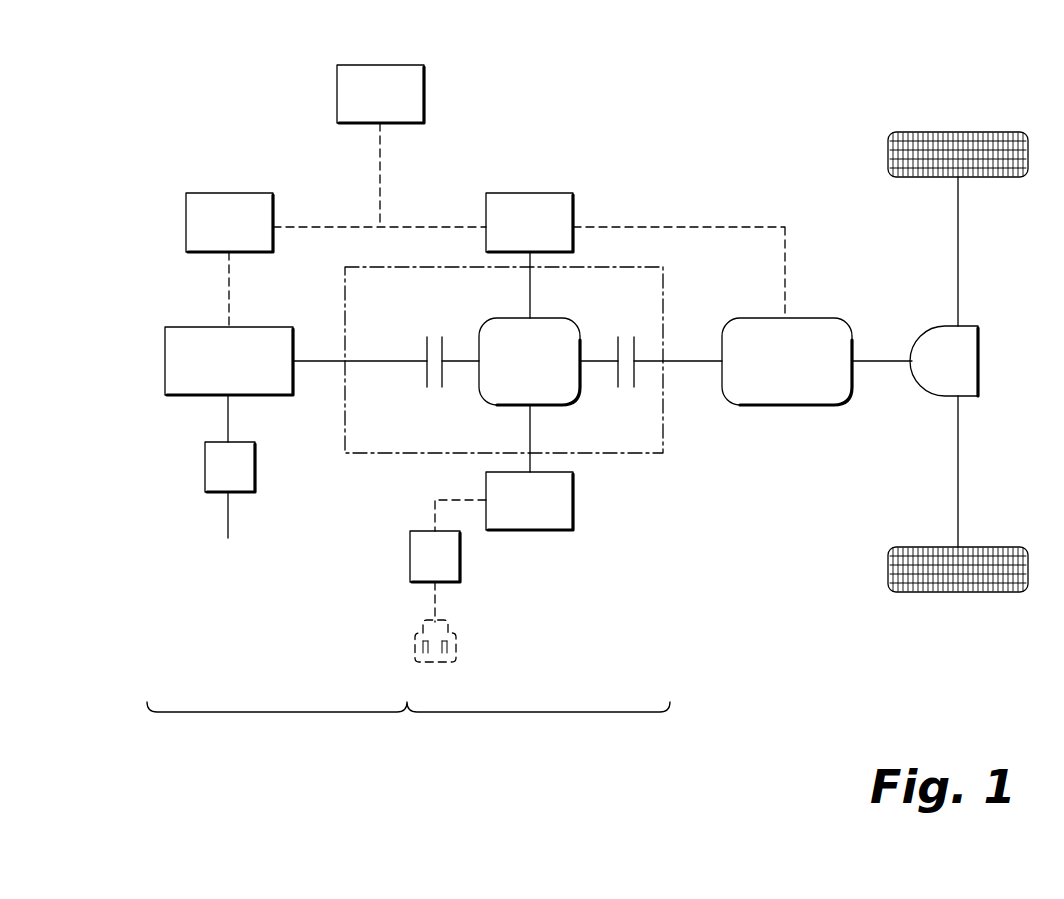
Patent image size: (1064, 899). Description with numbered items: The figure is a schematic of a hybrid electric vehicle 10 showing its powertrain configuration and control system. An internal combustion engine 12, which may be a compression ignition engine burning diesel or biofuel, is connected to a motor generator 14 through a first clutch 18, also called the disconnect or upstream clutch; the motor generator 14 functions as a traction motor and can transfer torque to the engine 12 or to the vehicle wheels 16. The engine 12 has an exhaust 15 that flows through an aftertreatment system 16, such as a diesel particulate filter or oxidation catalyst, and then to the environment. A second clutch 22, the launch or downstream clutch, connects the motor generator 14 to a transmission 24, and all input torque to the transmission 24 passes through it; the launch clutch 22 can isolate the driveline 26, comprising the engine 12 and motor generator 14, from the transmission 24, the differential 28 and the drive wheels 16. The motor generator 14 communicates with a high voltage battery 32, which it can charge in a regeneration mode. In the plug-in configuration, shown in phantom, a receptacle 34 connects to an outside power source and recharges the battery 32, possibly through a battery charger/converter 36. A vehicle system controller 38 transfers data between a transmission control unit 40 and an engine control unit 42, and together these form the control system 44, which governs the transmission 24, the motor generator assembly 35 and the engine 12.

The hybrid electric vehicle 10 is at (752, 95).
The internal combustion engine 12 is at (165, 361).
The motor generator 14 is at (545, 318).
The exhaust 15 is at (228, 418).
The vehicle wheels 16 is at (958, 132).
The first clutch 18 is at (427, 375).
The second clutch 22 is at (634, 375).
The transmission 24 is at (805, 318).
The driveline 26 is at (408, 727).
The differential 28 is at (978, 361).
The battery 32 is at (530, 530).
The receptacle 34 is at (415, 647).
The motor generator assembly 35 is at (617, 455).
The battery charger/converter 36 is at (448, 561).
The vehicle system controller 38 is at (380, 65).
The transmission control unit 40 is at (530, 193).
The engine control unit 42 is at (186, 222).
The control system 44 is at (503, 112).